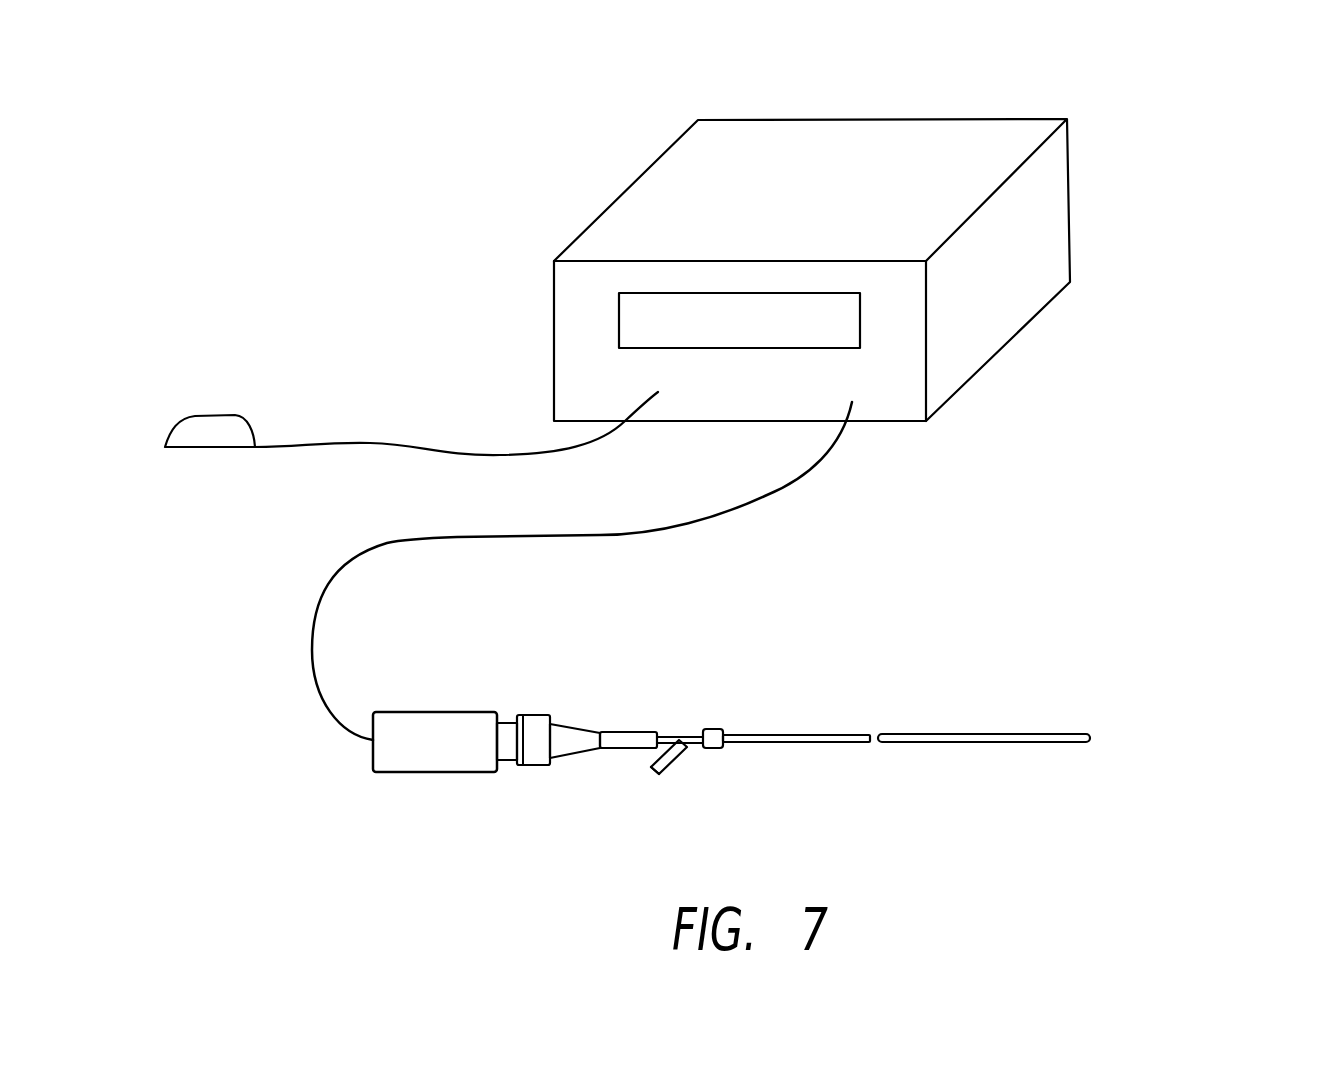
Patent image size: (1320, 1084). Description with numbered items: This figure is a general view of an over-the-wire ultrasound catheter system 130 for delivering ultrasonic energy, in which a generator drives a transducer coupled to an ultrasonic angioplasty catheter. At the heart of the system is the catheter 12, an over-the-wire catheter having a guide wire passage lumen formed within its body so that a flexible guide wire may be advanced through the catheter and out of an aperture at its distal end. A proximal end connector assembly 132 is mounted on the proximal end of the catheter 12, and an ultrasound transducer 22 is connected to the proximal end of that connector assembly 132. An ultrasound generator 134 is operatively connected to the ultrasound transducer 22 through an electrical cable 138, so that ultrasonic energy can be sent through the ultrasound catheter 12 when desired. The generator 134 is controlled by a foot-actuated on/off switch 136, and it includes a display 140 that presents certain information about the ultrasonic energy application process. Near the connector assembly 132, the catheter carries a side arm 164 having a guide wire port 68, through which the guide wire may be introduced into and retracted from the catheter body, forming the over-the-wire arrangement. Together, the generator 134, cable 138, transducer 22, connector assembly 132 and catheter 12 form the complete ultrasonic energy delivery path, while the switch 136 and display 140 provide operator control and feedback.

The over-the-wire ultrasound catheter system 130 is at (1170, 318).
The ultrasound generator 134 is at (1072, 198).
The display 140 is at (618, 318).
The foot-actuated on/off switch 136 is at (212, 412).
The electrical cable 138 is at (768, 495).
The ultrasound transducer 22 is at (437, 711).
The proximal end connector assembly 132 is at (728, 697).
The side arm 164 is at (662, 778).
The guide wire port 68 is at (640, 764).
The catheter 12 is at (985, 730).